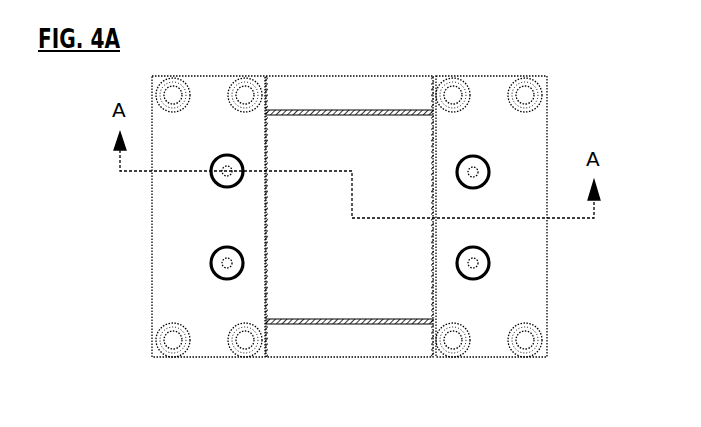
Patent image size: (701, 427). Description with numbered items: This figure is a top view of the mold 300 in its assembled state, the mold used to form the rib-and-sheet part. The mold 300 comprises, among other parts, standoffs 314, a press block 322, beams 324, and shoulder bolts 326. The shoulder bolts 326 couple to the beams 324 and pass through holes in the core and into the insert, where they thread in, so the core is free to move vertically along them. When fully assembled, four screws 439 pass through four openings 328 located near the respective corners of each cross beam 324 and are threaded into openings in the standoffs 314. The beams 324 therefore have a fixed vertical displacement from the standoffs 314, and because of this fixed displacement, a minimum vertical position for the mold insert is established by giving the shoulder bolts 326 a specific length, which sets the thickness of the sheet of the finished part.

The mold 300 is at (396, 214).
The standoffs 314 is at (344, 95).
The press block 322 is at (349, 214).
The beams 324 is at (522, 223).
The shoulder bolts 326 is at (226, 265).
The openings 328 is at (512, 86).
The screws 439 is at (528, 92).